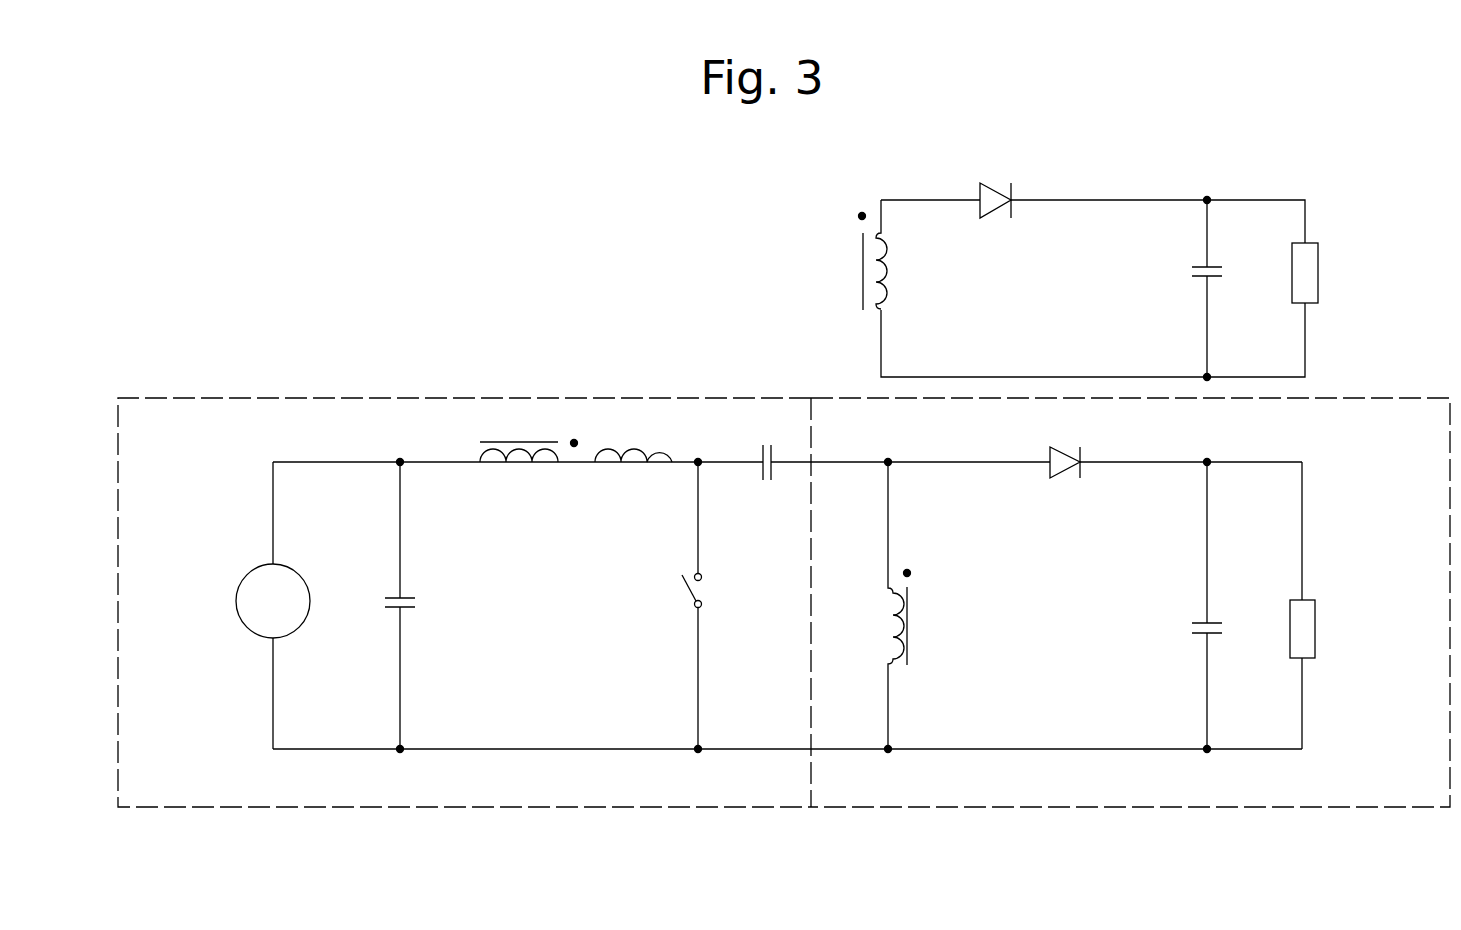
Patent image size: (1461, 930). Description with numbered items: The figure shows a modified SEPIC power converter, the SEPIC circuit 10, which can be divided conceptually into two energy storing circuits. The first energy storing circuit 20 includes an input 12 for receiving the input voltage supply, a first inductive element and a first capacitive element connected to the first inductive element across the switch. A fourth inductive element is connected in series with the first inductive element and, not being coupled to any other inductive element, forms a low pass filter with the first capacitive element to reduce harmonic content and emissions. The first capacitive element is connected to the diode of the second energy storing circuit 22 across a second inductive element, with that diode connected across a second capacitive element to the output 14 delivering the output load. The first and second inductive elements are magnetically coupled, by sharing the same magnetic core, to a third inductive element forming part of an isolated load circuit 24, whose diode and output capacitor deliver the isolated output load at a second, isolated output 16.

The SEPIC circuit 10 is at (236, 210).
The input 12 is at (185, 540).
The output 14 is at (1386, 567).
The second output 16 is at (1386, 215).
The first energy storing circuit 20 is at (466, 350).
The second energy storing circuit 22 is at (1133, 846).
The isolated load circuit 24 is at (1145, 148).